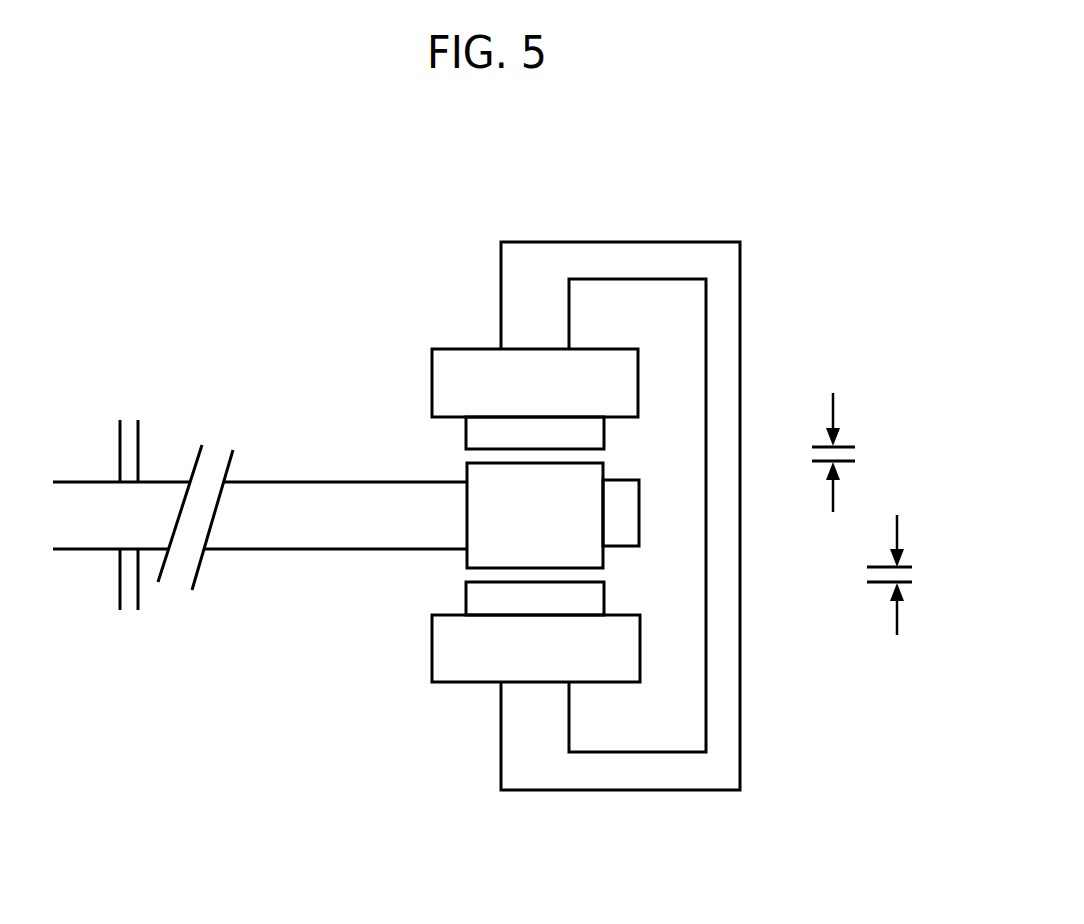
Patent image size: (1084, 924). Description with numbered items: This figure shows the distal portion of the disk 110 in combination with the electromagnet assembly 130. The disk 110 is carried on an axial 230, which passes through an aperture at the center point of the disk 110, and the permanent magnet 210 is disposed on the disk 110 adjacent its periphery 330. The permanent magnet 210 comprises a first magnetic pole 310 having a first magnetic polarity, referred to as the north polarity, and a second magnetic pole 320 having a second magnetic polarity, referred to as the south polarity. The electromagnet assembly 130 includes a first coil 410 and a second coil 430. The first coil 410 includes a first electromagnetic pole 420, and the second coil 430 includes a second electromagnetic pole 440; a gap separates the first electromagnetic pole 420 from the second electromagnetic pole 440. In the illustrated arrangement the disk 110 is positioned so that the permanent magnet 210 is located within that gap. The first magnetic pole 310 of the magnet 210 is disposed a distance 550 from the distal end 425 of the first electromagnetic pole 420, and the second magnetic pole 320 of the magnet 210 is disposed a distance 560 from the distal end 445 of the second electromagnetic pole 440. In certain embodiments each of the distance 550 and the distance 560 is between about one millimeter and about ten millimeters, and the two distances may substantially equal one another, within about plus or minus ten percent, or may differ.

The disk 110 is at (298, 556).
The electromagnet assembly 130 is at (752, 225).
The permanent magnet 210 is at (513, 527).
The axial 230 is at (138, 421).
The first magnetic pole 310 is at (469, 459).
The second magnetic pole 320 is at (469, 572).
The periphery 330 is at (640, 530).
The first coil 410 is at (513, 395).
The first electromagnetic pole 420 is at (513, 444).
The distal end of electromagnet pole 425 is at (603, 452).
The second coil 430 is at (513, 663).
The second electromagnetic pole 440 is at (513, 610).
The distal end of electromagnet pole 445 is at (603, 577).
The distance 550 is at (855, 454).
The distance 560 is at (912, 574).